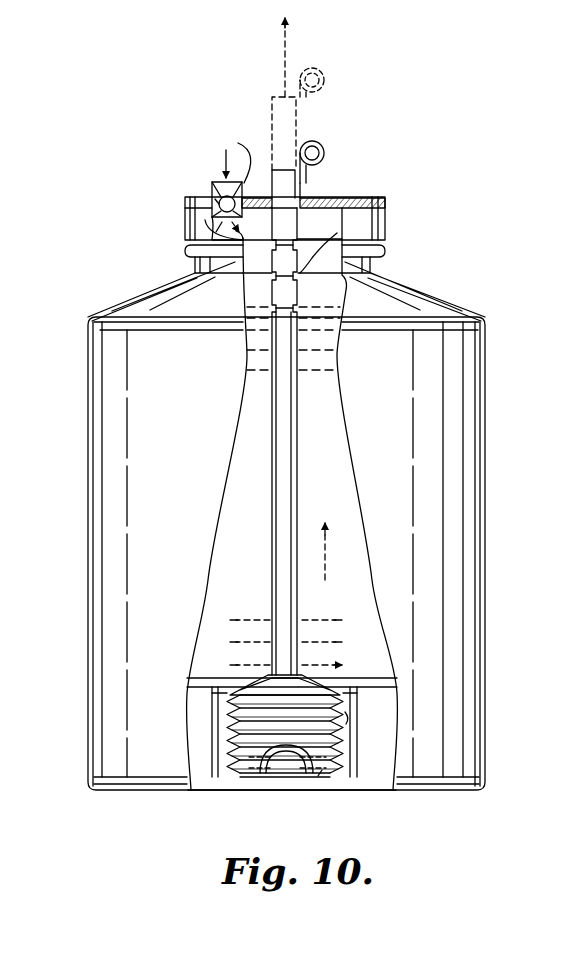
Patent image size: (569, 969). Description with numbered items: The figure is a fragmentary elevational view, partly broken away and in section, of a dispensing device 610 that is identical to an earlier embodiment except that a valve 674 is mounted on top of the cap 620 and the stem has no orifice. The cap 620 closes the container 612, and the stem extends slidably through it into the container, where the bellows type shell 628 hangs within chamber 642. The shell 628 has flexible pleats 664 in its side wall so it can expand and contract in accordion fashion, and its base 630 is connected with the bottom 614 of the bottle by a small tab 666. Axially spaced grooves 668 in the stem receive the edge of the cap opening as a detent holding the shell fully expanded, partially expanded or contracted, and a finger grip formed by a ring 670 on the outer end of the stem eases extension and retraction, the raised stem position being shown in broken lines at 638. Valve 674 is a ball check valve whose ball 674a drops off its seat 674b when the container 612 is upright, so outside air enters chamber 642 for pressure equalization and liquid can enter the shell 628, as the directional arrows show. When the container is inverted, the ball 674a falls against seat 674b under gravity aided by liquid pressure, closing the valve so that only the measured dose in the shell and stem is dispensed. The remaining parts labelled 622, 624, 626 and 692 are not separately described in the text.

The dispensing device 610 is at (500, 270).
The container 612 is at (107, 405).
The container bottom 614 is at (205, 782).
The cap 620 is at (184, 218).
The cap plate 622 is at (326, 207).
The bag bottom flange 624 is at (198, 690).
The bellows outer wall 626 is at (347, 722).
The bellows type shell 628 is at (262, 626).
The bellows bottom 630 is at (270, 774).
The tube extension 638 is at (273, 95).
The chamber 642 is at (352, 300).
The flow arrows 664 is at (343, 646).
The bottom outlet 666 is at (320, 774).
The telescoping tube 668 is at (298, 243).
The pull ring 670 is at (325, 150).
The valve 674 is at (212, 183).
The ball 674a is at (213, 200).
The seat 674b is at (223, 157).
The dome 692 is at (285, 776).